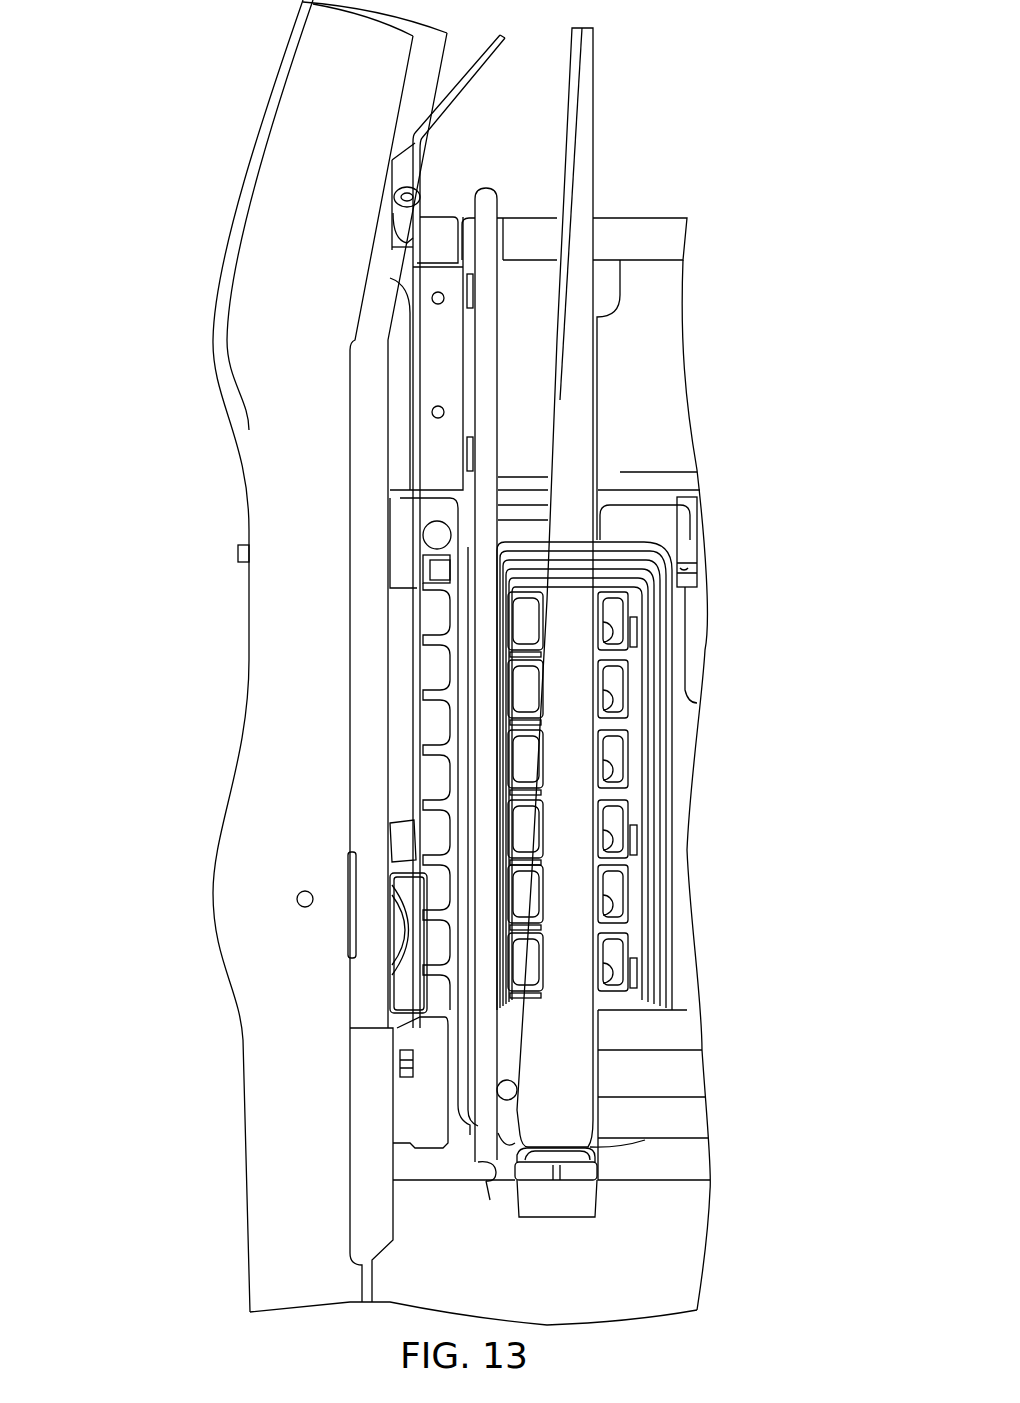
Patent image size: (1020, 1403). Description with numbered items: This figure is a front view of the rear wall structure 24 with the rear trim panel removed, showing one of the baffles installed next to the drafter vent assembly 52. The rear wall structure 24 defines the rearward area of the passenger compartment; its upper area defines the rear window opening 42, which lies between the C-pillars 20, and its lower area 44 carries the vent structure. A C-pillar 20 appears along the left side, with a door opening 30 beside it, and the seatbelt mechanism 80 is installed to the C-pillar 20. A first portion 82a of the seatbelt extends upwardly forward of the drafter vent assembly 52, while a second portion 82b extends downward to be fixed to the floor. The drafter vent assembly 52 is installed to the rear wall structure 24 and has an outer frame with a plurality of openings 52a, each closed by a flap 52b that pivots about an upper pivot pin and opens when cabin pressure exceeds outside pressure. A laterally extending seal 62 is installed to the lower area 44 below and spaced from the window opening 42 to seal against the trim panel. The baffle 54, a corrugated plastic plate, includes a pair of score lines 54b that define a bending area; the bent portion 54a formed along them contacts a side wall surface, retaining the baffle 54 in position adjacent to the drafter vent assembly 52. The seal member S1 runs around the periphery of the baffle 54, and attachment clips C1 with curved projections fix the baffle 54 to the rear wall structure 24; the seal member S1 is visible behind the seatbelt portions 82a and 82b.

The C-pillar 20 is at (352, 93).
The door opening 30 is at (313, 827).
The rear wall structure 24 is at (616, 743).
The rear window opening 42 is at (655, 217).
The lower area 44 is at (637, 375).
The drafter vent assembly 52 is at (638, 608).
The opening 52a is at (613, 640).
The flap 52b is at (605, 613).
The baffle 54 is at (487, 380).
The bent portion 54a is at (425, 1172).
The score line 54b is at (491, 1186).
The laterally extending seal 62 is at (688, 570).
The seatbelt mechanism 80 is at (407, 988).
The first portion of seatbelt 82a is at (477, 70).
The second portion of seatbelt 82b is at (582, 155).
The seal member S1 is at (487, 349).
The attachment clip C1 is at (502, 290).